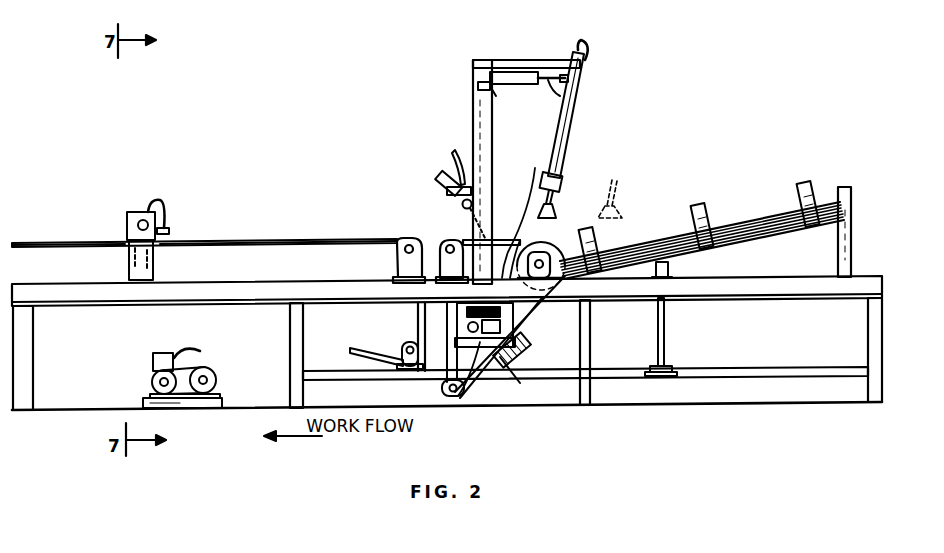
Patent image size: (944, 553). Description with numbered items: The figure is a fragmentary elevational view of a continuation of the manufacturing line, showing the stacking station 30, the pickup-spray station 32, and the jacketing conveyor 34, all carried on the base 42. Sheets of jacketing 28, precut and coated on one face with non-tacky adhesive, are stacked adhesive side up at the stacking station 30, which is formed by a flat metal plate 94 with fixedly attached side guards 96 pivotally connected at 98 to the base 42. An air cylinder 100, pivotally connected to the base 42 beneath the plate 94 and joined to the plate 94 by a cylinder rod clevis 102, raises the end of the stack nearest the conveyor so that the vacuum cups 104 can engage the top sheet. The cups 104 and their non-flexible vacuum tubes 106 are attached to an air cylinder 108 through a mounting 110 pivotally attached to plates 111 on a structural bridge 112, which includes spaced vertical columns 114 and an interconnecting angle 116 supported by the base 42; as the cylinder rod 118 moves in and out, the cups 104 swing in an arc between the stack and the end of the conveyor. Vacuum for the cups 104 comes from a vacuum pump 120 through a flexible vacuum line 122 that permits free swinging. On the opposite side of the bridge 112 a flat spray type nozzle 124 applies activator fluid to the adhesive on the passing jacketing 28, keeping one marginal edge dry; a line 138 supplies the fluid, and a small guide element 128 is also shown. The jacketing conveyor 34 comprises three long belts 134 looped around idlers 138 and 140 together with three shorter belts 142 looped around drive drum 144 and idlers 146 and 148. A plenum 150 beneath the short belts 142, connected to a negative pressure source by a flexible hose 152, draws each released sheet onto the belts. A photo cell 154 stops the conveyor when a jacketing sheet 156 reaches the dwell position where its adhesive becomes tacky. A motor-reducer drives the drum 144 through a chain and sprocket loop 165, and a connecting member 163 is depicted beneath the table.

The jacketing 28 is at (757, 204).
The stacking station 30 is at (711, 30).
The pickup-spray station 32 is at (508, 32).
The jacketing conveyor 34 is at (192, 36).
The base 42 is at (874, 264).
The flat metal plate 94 is at (770, 240).
The side guards 96 is at (690, 219).
The pivotal connection 98 is at (852, 214).
The air cylinder 100 is at (668, 337).
The cylinder rod clevis 102 is at (669, 272).
The vacuum cups 104 is at (594, 184).
The vacuum tubes 106 is at (566, 144).
The air cylinder 108 is at (530, 78).
The mounting 110 is at (552, 88).
The plates 111 is at (528, 62).
The structural bridge 112 is at (458, 74).
The columns 114 is at (478, 104).
The interconnecting angle 116 is at (492, 88).
The cylinder rod 118 is at (566, 120).
The vacuum pump 120 is at (126, 375).
The flexible vacuum line 122 is at (200, 350).
The flat spray type nozzle 124 is at (445, 196).
The guide blade 128 is at (452, 162).
The conveyor type belts 134 is at (65, 242).
The idler 138 is at (398, 238).
The idler 140 is at (407, 344).
The short conveyor type belts 142 is at (508, 252).
The drive drum 144 is at (443, 242).
The idler 146 is at (448, 400).
The idler 148 is at (549, 246).
The plenum 150 is at (523, 213).
The flexible hose 152 is at (518, 352).
The photo cell 154 is at (137, 220).
The jacketing sheet 156 is at (300, 238).
The connecting rod 163 is at (500, 380).
The chain and sprocket loop 165 is at (476, 398).